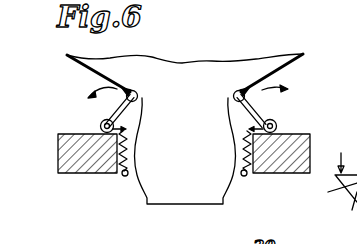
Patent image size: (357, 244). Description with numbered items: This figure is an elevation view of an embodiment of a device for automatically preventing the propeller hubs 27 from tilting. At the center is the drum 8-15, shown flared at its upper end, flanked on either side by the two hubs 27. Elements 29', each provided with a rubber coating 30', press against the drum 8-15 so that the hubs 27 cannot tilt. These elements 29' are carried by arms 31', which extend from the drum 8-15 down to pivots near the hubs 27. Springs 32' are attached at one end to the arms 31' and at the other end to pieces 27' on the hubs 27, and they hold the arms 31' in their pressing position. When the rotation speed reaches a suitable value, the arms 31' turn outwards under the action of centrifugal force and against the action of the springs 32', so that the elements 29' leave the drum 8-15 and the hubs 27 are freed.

The drum 8-15 is at (180, 73).
The rubber coating 30' is at (183, 80).
The elements 29' is at (183, 88).
The arms 31' is at (183, 113).
The hubs 27 is at (183, 176).
The springs 32' is at (191, 174).
The pieces 27' is at (164, 207).